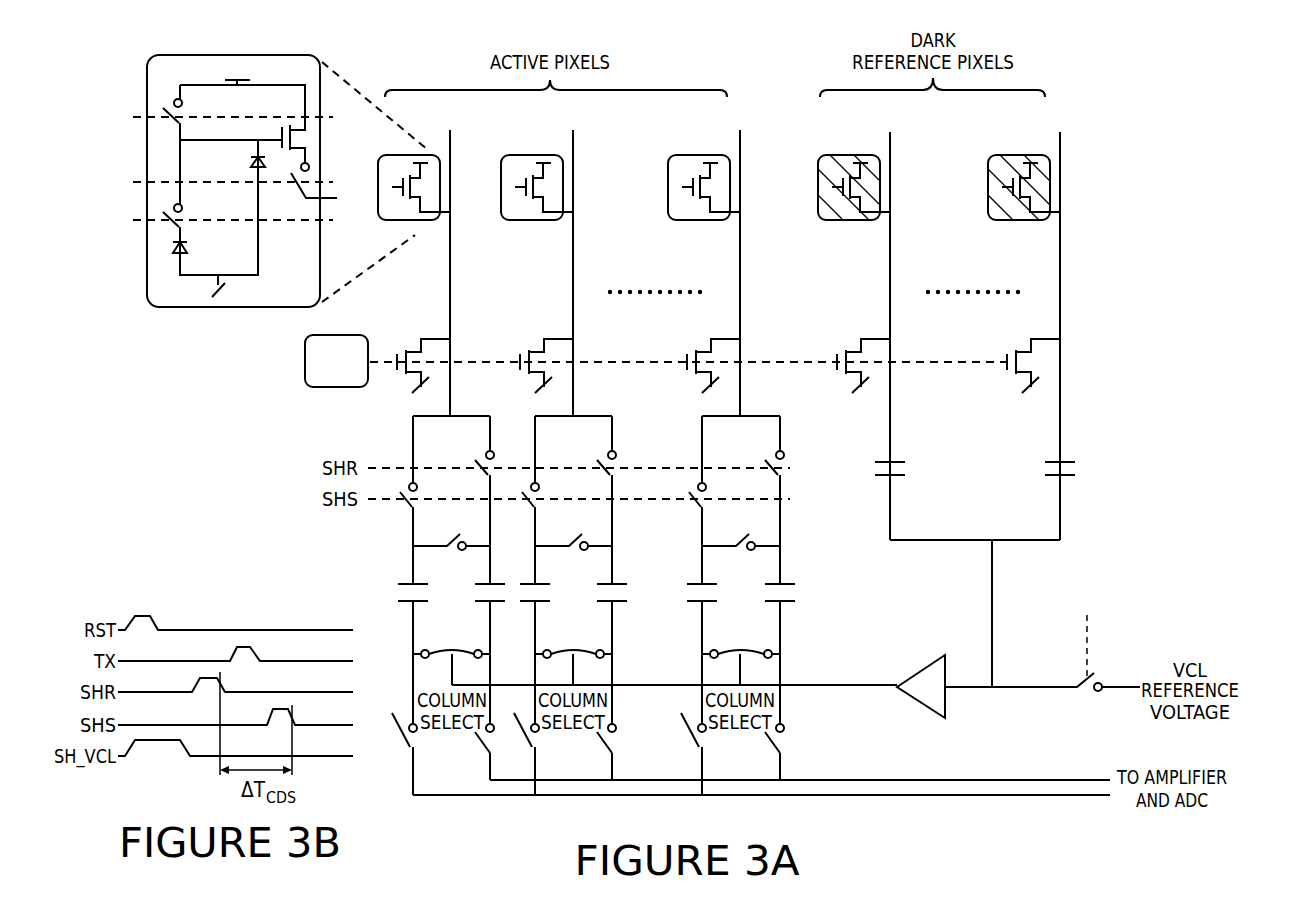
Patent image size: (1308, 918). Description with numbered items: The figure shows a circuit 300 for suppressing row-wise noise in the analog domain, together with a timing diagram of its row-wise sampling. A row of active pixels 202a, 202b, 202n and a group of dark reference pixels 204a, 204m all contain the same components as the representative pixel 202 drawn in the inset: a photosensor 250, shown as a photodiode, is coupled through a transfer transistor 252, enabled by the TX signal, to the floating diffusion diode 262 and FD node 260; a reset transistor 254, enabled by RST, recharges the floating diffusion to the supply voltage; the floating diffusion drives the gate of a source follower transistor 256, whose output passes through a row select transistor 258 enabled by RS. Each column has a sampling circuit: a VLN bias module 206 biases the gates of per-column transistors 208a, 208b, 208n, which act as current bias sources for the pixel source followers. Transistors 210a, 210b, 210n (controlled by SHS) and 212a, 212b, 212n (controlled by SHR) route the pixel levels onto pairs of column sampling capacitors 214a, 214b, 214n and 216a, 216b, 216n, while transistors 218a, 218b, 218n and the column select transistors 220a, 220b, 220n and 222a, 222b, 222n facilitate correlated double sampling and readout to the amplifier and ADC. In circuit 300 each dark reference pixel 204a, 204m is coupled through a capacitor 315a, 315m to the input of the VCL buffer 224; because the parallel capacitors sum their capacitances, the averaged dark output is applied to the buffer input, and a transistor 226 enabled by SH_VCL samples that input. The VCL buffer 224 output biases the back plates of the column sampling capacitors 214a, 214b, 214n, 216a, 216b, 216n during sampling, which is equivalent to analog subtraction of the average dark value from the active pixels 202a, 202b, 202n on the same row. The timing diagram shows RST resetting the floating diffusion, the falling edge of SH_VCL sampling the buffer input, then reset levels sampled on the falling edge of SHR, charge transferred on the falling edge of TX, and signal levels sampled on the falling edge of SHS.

The pixel 202 is at (258, 168).
The photosensor 250 is at (185, 254).
The transfer transistor 252 is at (187, 213).
The reset transistor 254 is at (187, 108).
The source follower transistor 256 is at (287, 127).
The row select transistor 258 is at (303, 191).
The FD node 260 is at (224, 161).
The floating diffusion diode 262 is at (257, 139).
The active pixel 202a is at (415, 222).
The active pixel 202b is at (537, 222).
The active pixel 202n is at (705, 222).
The dark reference pixel 204a is at (850, 222).
The dark reference pixel 204m is at (1020, 222).
The VLN bias module 206 is at (305, 382).
The per-column transistor 208a is at (418, 352).
The per-column transistor 208b is at (540, 352).
The per-column transistor 208n is at (706, 352).
The transistor 210a is at (408, 514).
The transistor 210b is at (530, 514).
The transistor 210n is at (697, 514).
The transistor 212a is at (487, 452).
The transistor 212b is at (609, 452).
The transistor 212n is at (777, 452).
The column sampling capacitor 214a is at (405, 602).
The column sampling capacitor 214b is at (527, 602).
The column sampling capacitor 214n is at (694, 602).
The column sampling capacitor 216a is at (476, 602).
The column sampling capacitor 216b is at (598, 602).
The column sampling capacitor 216n is at (766, 602).
The transistor 218a is at (453, 533).
The transistor 218b is at (575, 533).
The transistor 218n is at (743, 533).
The transistor 220a is at (395, 743).
The transistor 220b is at (517, 743).
The transistor 220n is at (684, 743).
The transistor 222a is at (483, 748).
The transistor 222b is at (605, 748).
The transistor 222n is at (773, 748).
The VCL buffer 224 is at (915, 705).
The transistor 226 is at (1100, 668).
The circuit 300 is at (1122, 98).
The capacitor 315a is at (875, 468).
The capacitor 315m is at (1045, 468).